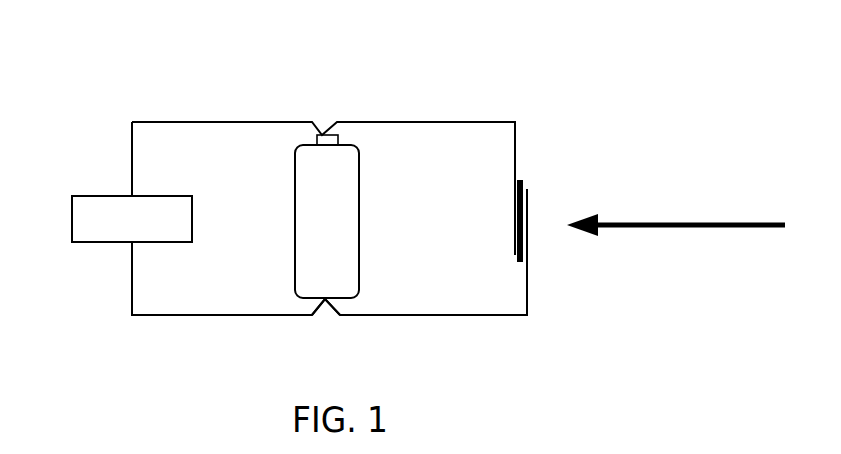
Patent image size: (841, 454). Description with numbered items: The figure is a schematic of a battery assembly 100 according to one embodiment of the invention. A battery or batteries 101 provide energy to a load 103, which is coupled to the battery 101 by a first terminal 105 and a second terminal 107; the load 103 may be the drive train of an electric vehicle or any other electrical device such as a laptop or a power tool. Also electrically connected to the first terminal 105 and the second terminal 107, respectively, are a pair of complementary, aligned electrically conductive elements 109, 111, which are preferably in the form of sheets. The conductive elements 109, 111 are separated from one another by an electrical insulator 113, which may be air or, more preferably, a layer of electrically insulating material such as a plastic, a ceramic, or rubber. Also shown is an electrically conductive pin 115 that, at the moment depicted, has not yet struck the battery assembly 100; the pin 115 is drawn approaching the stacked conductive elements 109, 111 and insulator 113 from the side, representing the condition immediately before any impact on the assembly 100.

The battery assembly 100 is at (521, 71).
The battery 101 is at (347, 234).
The load 103 is at (92, 196).
The first terminal 105 is at (340, 137).
The second terminal 107 is at (345, 298).
The electrically conductive element 109 is at (515, 200).
The electrically conductive element 111 is at (527, 247).
The electrical insulator 113 is at (520, 180).
The electrically conductive pin 115 is at (625, 222).